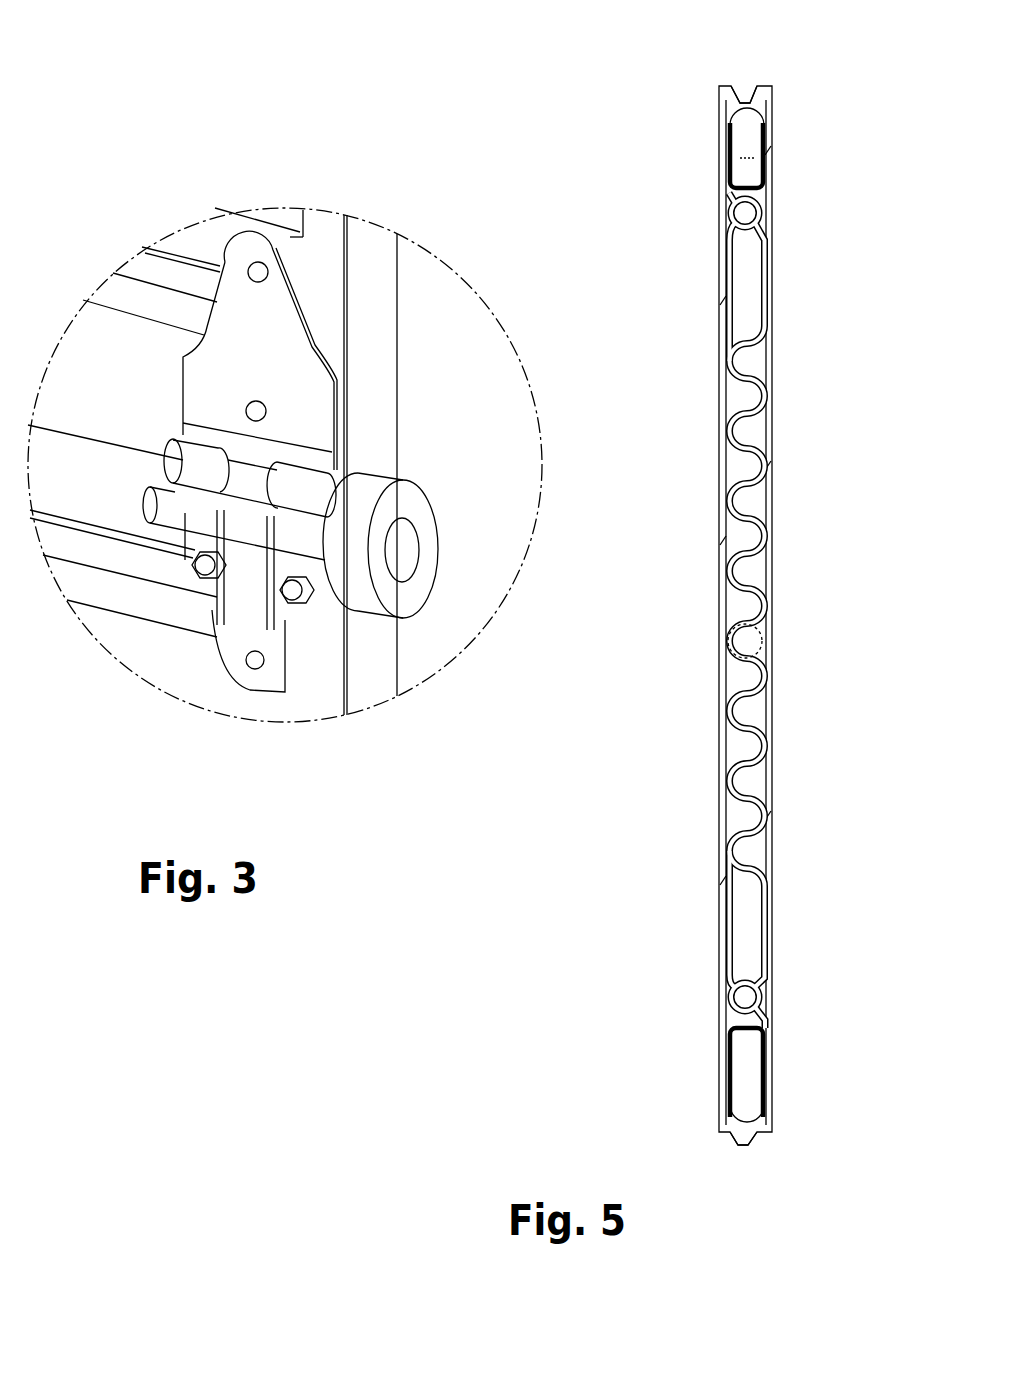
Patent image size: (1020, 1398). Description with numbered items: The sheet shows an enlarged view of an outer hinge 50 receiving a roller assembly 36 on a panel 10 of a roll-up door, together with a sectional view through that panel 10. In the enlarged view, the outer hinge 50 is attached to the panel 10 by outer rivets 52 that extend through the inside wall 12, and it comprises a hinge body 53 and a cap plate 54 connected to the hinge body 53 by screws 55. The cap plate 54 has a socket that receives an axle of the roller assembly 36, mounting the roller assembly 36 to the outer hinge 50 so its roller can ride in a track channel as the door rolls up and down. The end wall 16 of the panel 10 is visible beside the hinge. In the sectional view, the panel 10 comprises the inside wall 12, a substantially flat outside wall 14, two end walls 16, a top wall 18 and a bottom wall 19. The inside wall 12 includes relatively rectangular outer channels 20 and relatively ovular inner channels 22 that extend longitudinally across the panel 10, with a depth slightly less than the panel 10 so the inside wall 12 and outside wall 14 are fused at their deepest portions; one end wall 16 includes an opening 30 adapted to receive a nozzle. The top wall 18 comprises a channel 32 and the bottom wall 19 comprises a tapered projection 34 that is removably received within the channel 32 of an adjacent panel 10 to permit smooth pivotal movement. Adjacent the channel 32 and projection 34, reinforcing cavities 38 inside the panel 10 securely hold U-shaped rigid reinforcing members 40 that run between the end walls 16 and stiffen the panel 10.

In FIG. 3, the panel 10 is at (398, 288).
In FIG. 5, the panel 10 is at (680, 131).
In FIG. 3, the inside wall 12 is at (88, 345).
In FIG. 5, the inside wall 12 is at (774, 171).
In FIG. 5, the outside wall 14 is at (716, 256).
In FIG. 3, the end wall 16 is at (376, 343).
In FIG. 5, the top wall 18 is at (727, 84).
In FIG. 5, the bottom wall 19 is at (730, 1140).
In FIG. 5, the outer channel 20 is at (750, 213).
In FIG. 5, the inner channel 22 is at (752, 363).
In FIG. 5, the opening 30 is at (770, 650).
In FIG. 5, the channel 32 is at (745, 98).
In FIG. 5, the projection 34 is at (748, 1148).
In FIG. 3, the roller assembly 36 is at (430, 592).
In FIG. 5, the reinforcing cavity 38 is at (749, 140).
In FIG. 5, the reinforcing member 40 is at (730, 160).
In FIG. 3, the outer hinge 50 is at (336, 460).
In FIG. 3, the outer rivet 52 is at (250, 406).
In FIG. 3, the hinge body 53 is at (202, 398).
In FIG. 3, the cap plate 54 is at (193, 520).
In FIG. 3, the screw 55 is at (286, 596).